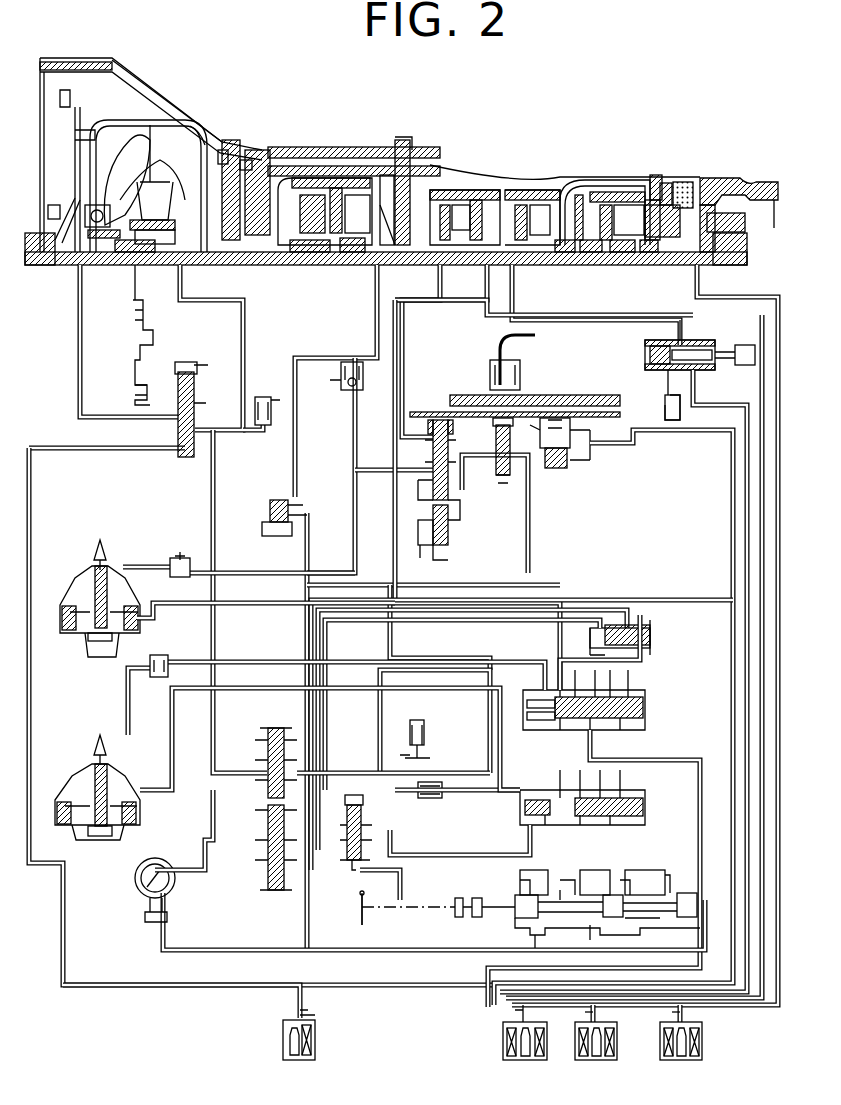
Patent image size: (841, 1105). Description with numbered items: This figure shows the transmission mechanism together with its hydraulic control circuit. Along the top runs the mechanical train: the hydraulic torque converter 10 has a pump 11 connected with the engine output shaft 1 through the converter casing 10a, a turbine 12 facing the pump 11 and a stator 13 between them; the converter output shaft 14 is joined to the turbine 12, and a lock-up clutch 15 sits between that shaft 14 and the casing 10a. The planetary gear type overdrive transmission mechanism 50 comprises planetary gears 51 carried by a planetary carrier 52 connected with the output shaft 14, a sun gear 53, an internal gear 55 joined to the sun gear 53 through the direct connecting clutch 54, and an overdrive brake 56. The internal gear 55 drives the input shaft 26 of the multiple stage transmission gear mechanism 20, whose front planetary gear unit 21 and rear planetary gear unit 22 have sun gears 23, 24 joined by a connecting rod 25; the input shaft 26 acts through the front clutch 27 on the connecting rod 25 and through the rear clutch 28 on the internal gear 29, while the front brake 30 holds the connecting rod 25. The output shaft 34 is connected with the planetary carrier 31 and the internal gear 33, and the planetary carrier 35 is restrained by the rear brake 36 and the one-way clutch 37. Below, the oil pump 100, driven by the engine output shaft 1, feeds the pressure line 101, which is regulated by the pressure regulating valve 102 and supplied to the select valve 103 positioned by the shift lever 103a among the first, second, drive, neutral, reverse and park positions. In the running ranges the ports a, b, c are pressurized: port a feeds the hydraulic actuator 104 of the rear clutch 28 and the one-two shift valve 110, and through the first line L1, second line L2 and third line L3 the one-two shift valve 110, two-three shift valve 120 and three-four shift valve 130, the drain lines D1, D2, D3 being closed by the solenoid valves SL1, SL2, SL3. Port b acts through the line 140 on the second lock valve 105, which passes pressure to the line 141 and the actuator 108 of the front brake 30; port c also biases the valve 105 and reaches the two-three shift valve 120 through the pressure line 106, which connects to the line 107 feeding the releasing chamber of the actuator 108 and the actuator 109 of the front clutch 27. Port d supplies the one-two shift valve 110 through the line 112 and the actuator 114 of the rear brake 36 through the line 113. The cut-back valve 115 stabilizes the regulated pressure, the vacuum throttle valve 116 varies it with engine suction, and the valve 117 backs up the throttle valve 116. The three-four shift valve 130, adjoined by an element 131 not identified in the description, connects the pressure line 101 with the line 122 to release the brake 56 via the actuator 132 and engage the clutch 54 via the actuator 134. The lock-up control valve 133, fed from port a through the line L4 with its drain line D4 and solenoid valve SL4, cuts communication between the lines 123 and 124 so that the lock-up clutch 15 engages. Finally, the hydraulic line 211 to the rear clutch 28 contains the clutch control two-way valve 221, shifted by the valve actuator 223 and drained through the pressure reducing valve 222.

The engine output shaft 1 is at (38, 266).
The hydraulic torque converter 10 is at (200, 130).
The converter casing 10a is at (150, 120).
The pump 11 is at (232, 140).
The turbine 12 is at (118, 158).
The stator 13 is at (165, 205).
The converter output shaft 14 is at (103, 266).
The lock-up clutch 15 is at (75, 142).
The multiple stage transmission gear mechanism 20 is at (540, 190).
The front planetary gear unit 21 is at (572, 180).
The rear planetary gear unit 22 is at (640, 192).
The sun gear 23 is at (560, 252).
The sun gear 24 is at (622, 252).
The connecting rod 25 is at (590, 252).
The input shaft 26 is at (482, 265).
The front clutch 27 is at (460, 190).
The rear clutch 28 is at (520, 190).
The internal gear 29 is at (590, 195).
The front brake 30 is at (478, 190).
The planetary carrier 31 is at (538, 335).
The internal gear 33 is at (655, 200).
The output shaft 34 is at (648, 252).
The planetary carrier 35 is at (615, 192).
The rear brake 36 is at (690, 180).
The one-way clutch 37 is at (662, 260).
The planetary gear type overdrive transmission mechanism 50 is at (316, 147).
The planetary gears 51 is at (268, 180).
The planetary carrier 52 is at (345, 252).
The sun gear 53 is at (300, 252).
The direct connecting clutch 54 is at (356, 188).
The internal gear 55 is at (300, 178).
The overdrive brake 56 is at (345, 147).
The oil pump 100 is at (140, 880).
The pressure line 101 is at (370, 585).
The pressure regulating valve 102 is at (255, 870).
The select valve 103 is at (512, 898).
The shift lever 103a is at (355, 912).
The hydraulic actuator 104 is at (512, 266).
The second lock valve 105 is at (365, 790).
The pressure line 106 is at (460, 795).
The line 107 is at (488, 828).
The actuator 108 is at (82, 825).
The actuator 109 is at (445, 270).
The 1-2 shift valve 110 is at (568, 730).
The line 112 is at (705, 875).
The line 113 is at (612, 755).
The actuator 114 is at (702, 268).
The cut-back valve 115 is at (635, 620).
The vacuum throttle valve 116 is at (515, 415).
The back-up valve 117 is at (575, 450).
The 2-3 shift valve 120 is at (598, 785).
The line 122 is at (368, 470).
The line 123 is at (232, 520).
The line 124 is at (78, 380).
The 3-4 shift valve 130 is at (430, 400).
The lock-up signal valve 131 is at (455, 485).
The actuator 132 is at (82, 645).
The lock-up control valve 133 is at (200, 355).
The actuator 134 is at (364, 270).
The line 140 is at (428, 798).
The line 141 is at (332, 745).
The hydraulic line 211 is at (487, 315).
The clutch control two-way valve 221 is at (710, 340).
The pressure reducing valve 222 is at (660, 400).
The valve actuator 223 is at (745, 365).
The port a is at (576, 925).
The port b is at (560, 890).
The port c is at (538, 955).
The port d is at (630, 920).
The first line L1 is at (700, 970).
The second line L2 is at (740, 990).
The third line L3 is at (762, 995).
The line L4 is at (110, 990).
The drain line D1 is at (505, 1012).
The drain line D2 is at (605, 1016).
The drain line D3 is at (693, 1016).
The drain line D4 is at (308, 1010).
The first solenoid valve SL1 is at (506, 1044).
The second solenoid valve SL2 is at (616, 1045).
The third solenoid valve SL3 is at (700, 1045).
The solenoid valve SL4 is at (320, 1043).